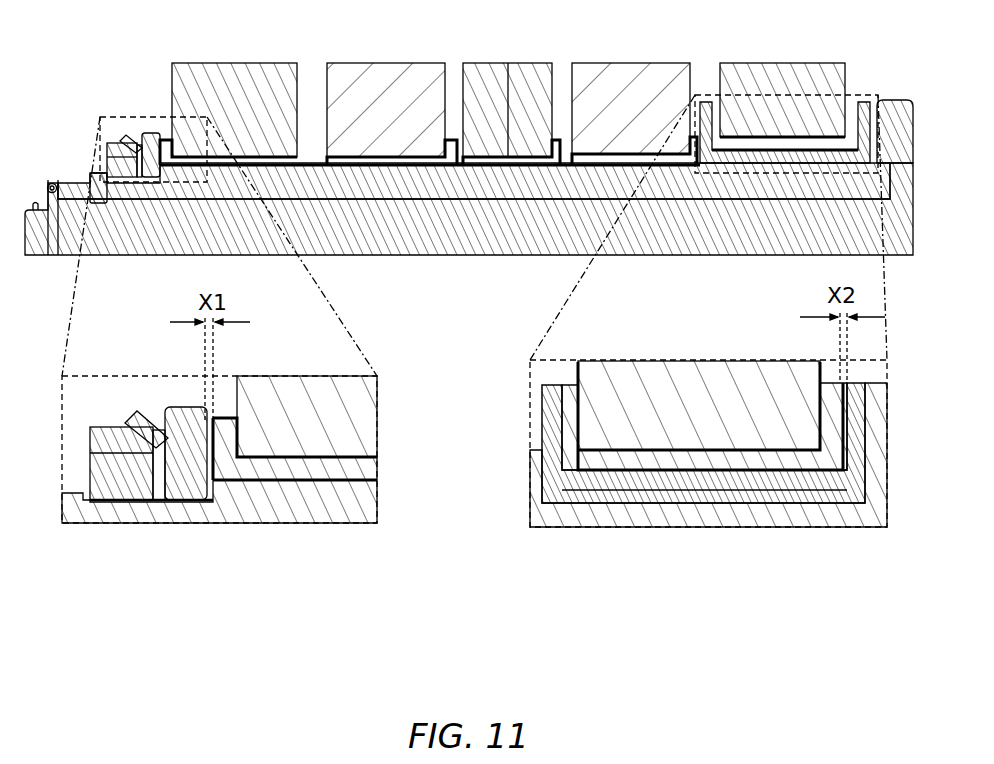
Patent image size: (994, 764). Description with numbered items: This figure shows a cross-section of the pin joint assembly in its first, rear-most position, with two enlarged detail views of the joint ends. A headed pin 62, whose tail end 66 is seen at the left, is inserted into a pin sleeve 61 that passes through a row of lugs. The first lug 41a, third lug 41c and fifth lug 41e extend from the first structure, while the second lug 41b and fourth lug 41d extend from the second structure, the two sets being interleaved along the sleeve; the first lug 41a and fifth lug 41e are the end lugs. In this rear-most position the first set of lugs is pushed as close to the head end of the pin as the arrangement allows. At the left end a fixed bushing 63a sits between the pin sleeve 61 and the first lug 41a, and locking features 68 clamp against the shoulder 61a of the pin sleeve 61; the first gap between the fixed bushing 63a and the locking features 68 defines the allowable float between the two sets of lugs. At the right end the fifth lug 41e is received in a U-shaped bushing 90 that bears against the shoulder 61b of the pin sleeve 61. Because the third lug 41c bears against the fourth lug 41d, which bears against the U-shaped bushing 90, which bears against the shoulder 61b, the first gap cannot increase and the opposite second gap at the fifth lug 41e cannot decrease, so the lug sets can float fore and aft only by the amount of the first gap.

The first lug 41a is at (245, 80).
The second lug 41b is at (395, 75).
The third lug 41c is at (513, 75).
The fourth lug 41d is at (628, 73).
The fifth lug 41e is at (788, 77).
The pin sleeve 61 is at (350, 183).
The shoulder of the pin sleeve 61a is at (196, 501).
The shoulder of the pin sleeve 61b is at (893, 107).
The headed pin 62 is at (422, 237).
The fixed bushing 63a is at (267, 467).
The tail end 66 is at (51, 184).
The locking features 68 is at (140, 143).
The U-shaped bushing 90 is at (567, 477).